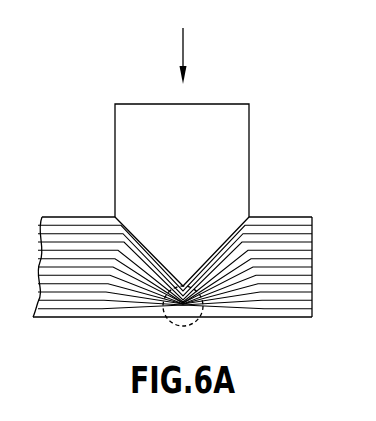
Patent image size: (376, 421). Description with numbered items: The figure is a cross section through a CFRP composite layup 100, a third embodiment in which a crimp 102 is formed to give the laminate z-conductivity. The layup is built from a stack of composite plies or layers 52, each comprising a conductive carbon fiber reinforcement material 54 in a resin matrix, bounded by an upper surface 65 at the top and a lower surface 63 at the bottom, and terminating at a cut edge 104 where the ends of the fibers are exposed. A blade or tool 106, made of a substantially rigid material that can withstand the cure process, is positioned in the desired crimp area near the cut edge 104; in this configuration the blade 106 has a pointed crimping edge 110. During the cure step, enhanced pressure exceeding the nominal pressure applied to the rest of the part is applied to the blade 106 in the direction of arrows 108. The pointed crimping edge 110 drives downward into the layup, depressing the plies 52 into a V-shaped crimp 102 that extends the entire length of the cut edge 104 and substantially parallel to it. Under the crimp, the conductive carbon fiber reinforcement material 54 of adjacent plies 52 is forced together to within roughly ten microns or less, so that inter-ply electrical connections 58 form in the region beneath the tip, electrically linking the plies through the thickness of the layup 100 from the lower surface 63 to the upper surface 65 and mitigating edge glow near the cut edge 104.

The CFRP composite layup 100 is at (88, 189).
The crimp 102 is at (241, 228).
The cut edge 104 is at (314, 221).
The blade or tool 106 is at (243, 123).
The arrows 108 is at (183, 46).
The pointed crimping edge 110 is at (185, 264).
The composite plies or layers 52 is at (298, 238).
The conductive carbon fiber reinforcement material 54 is at (298, 292).
The inter-ply electrical connections 58 is at (205, 316).
The lower surface 63 is at (113, 319).
The upper surface 65 is at (58, 217).